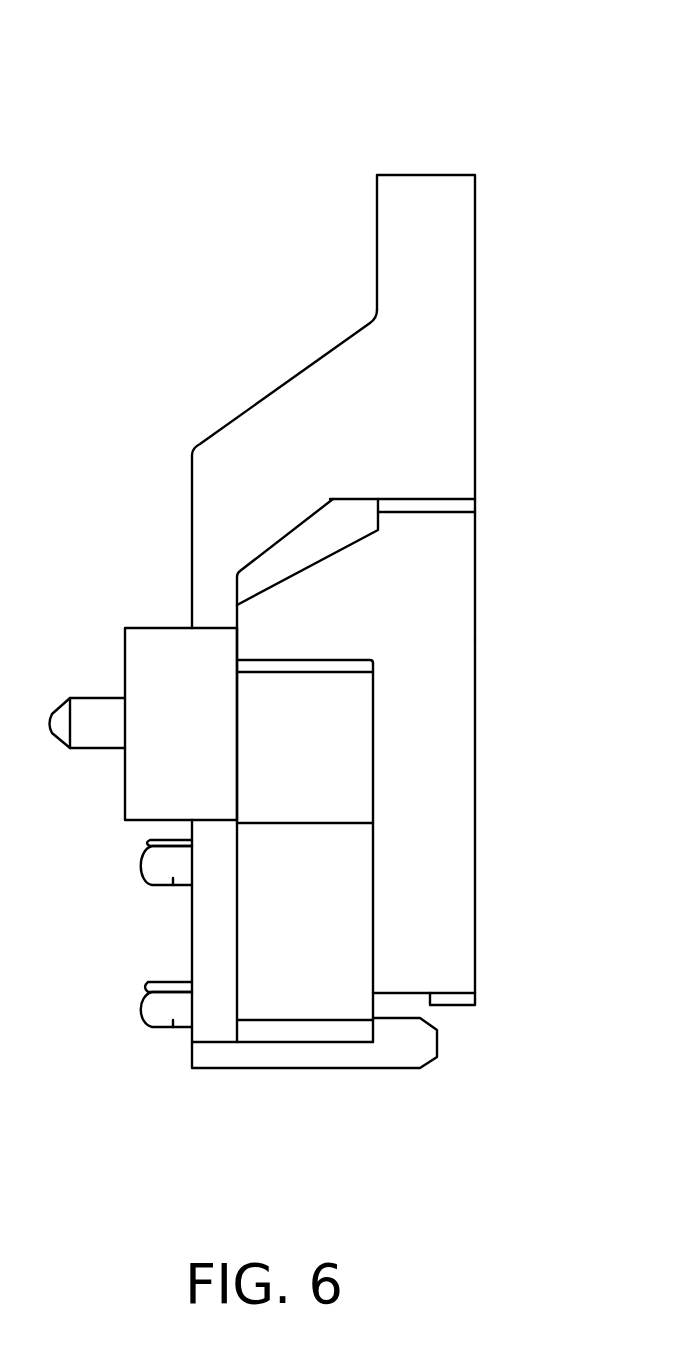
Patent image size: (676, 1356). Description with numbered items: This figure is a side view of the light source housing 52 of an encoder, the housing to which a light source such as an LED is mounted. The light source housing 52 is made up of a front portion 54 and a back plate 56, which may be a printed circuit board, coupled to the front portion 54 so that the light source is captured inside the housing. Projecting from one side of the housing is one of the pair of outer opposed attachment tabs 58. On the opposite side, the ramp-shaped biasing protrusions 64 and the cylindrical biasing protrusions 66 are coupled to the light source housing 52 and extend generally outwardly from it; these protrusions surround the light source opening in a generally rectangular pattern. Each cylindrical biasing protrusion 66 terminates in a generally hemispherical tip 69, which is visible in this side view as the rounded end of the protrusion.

The light source housing 52 is at (427, 138).
The front portion 54 is at (467, 324).
The back plate 56 is at (467, 641).
The outer opposed attachment tab 58 is at (92, 697).
The ramp-shaped biasing protrusion 64 is at (190, 822).
The hemispherical tip 69 is at (145, 870).
The cylindrical biasing protrusion 66 is at (173, 885).